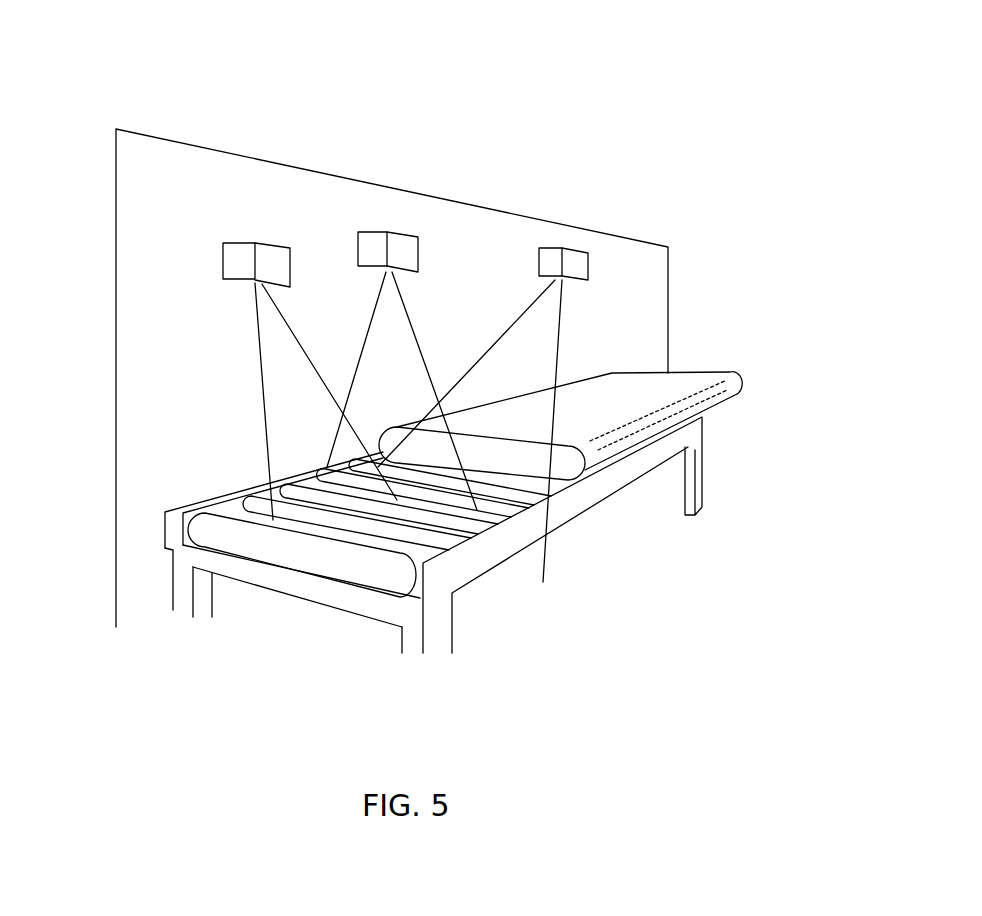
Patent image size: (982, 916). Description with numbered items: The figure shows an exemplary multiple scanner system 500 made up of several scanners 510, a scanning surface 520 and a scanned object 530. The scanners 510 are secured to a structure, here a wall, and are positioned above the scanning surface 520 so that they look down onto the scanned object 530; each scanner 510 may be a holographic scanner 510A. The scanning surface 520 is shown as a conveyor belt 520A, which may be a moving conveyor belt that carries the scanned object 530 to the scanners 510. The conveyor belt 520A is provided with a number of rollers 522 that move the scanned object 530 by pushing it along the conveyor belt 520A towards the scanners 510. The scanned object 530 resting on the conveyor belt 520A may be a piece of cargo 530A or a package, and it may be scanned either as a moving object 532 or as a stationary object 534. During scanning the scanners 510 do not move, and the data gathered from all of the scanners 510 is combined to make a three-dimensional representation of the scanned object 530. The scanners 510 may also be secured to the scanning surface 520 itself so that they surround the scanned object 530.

The multiple scanner system 500 is at (151, 70).
The scanner 510 is at (393, 359).
The holographic scanner 510A is at (237, 258).
The scanning surface 520 is at (418, 519).
The conveyor belt 520A is at (256, 485).
The roller 522 is at (443, 540).
The scanned object 530 is at (626, 401).
The piece of cargo 530A is at (731, 417).
The moving object 532 is at (658, 415).
The stationary object 534 is at (716, 390).